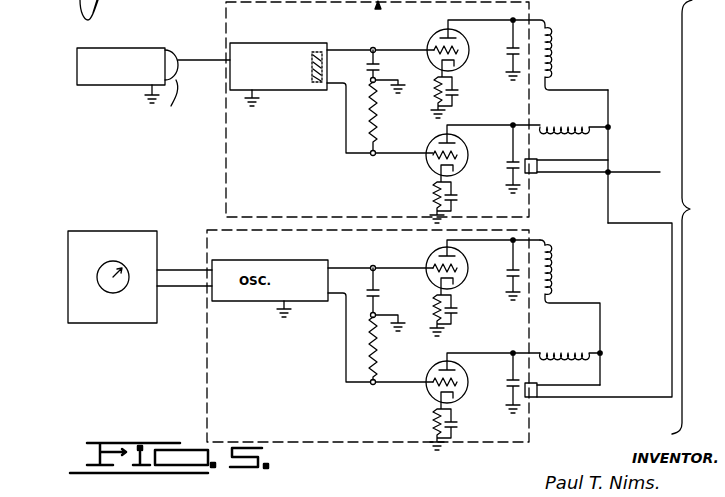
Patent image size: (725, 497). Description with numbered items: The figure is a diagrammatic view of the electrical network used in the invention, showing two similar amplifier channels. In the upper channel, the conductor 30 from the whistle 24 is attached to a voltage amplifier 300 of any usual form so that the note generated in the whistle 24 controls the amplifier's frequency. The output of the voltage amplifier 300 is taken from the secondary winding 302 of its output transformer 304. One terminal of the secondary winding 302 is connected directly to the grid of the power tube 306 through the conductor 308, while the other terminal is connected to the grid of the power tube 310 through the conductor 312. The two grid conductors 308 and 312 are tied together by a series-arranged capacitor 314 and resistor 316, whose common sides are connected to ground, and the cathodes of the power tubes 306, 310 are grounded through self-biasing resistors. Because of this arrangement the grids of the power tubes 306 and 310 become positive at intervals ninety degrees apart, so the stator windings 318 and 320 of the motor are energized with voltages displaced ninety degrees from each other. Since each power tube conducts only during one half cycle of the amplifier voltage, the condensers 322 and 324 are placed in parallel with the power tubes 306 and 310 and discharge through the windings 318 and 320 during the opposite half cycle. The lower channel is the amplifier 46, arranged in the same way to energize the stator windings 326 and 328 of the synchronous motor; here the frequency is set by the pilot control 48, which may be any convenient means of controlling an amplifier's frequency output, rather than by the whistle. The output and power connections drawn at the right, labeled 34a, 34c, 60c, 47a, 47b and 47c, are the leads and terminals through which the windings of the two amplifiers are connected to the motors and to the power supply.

The whistle 24 is at (80, 80).
The conductor 30 is at (201, 56).
The amplifier 46 is at (465, 445).
The pilot control 48 is at (80, 269).
The voltage amplifier 300 is at (283, 27).
The secondary winding 302 is at (335, 30).
The output transformer 304 is at (311, 59).
The power tube 306 is at (438, 30).
The conductor 308 is at (365, 48).
The power tube 310 is at (462, 148).
The conductor 312 is at (419, 139).
The capacitor 314 is at (380, 67).
The resistor 316 is at (380, 114).
The stator winding 318 is at (552, 53).
The stator winding 320 is at (556, 125).
The condenser 322 is at (509, 51).
The condenser 324 is at (509, 165).
The stator winding 326 is at (550, 265).
The stator winding 328 is at (568, 351).
The output lead 34a is at (613, 129).
The output terminal 34c is at (536, 130).
The common lead 60c is at (618, 173).
The output lead 47a is at (602, 365).
The plate lead 47b is at (543, 240).
The output terminal 47c is at (538, 358).